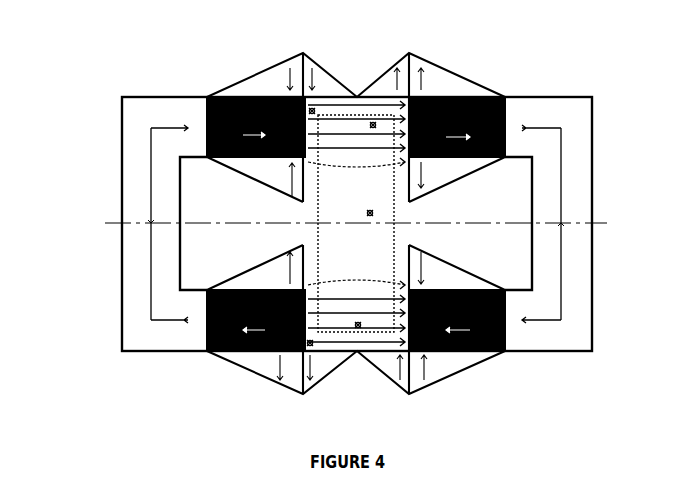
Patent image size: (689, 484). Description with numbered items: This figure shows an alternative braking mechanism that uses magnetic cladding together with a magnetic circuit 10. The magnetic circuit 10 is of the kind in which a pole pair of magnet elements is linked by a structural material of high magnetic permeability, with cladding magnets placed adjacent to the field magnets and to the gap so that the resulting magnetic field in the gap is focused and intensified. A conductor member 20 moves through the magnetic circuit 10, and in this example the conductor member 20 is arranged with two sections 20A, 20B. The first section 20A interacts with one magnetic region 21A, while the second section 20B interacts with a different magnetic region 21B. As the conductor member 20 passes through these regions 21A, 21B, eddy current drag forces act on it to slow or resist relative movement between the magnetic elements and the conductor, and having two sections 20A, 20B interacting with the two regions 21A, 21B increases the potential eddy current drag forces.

The magnetic circuit 10 is at (84, 222).
The conductor member 20 is at (373, 213).
The first section of the conductor member 20A is at (373, 125).
The second section of the conductor member 20B is at (358, 325).
The first magnetic region 21A is at (312, 111).
The second magnetic region 21B is at (310, 343).